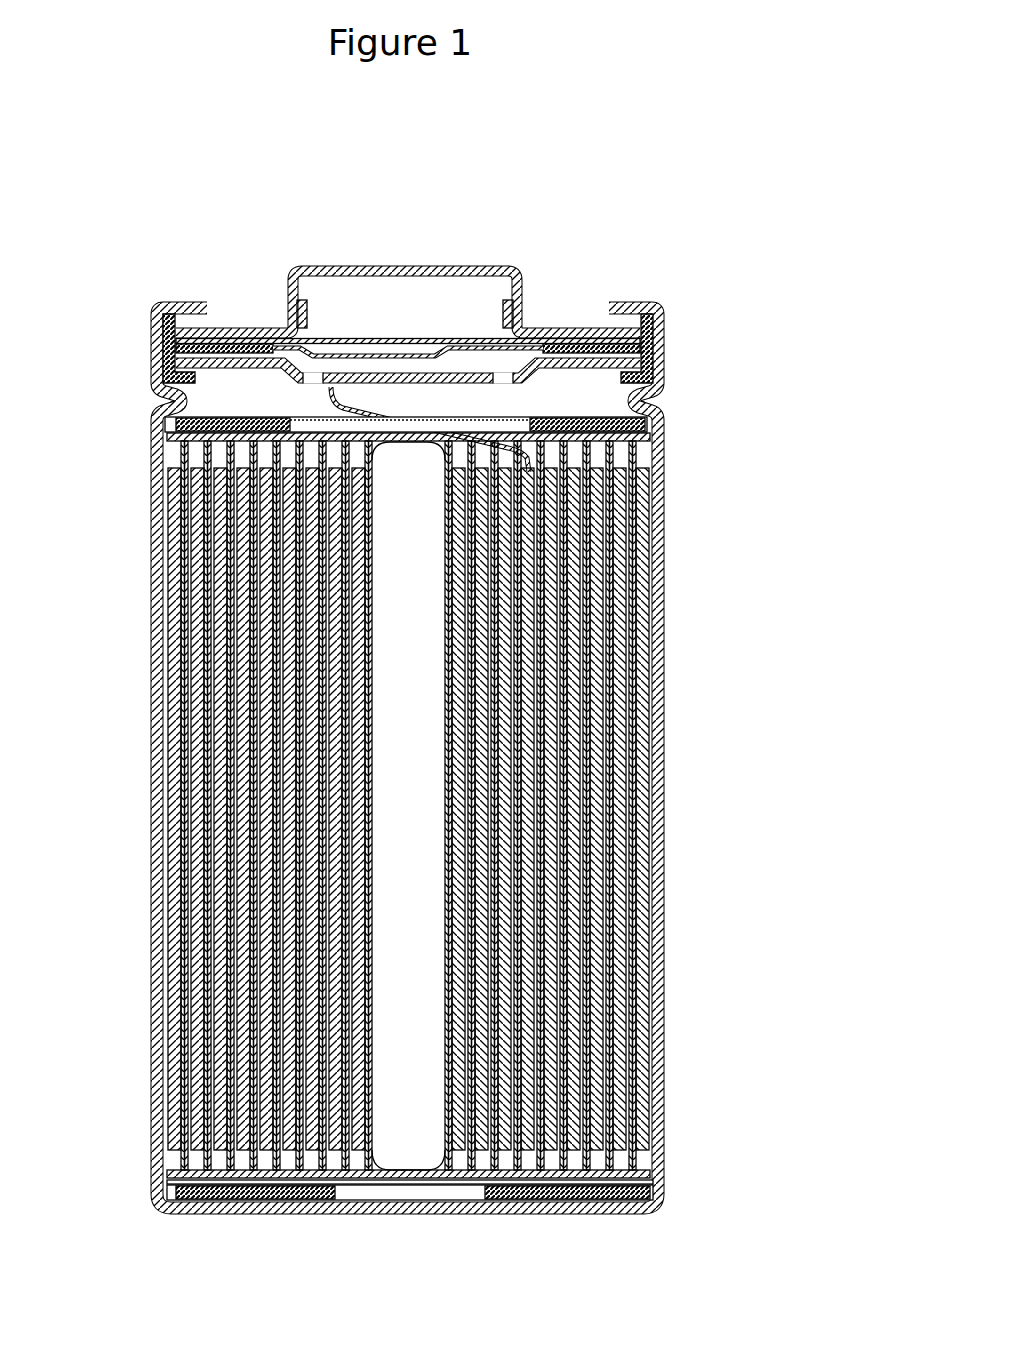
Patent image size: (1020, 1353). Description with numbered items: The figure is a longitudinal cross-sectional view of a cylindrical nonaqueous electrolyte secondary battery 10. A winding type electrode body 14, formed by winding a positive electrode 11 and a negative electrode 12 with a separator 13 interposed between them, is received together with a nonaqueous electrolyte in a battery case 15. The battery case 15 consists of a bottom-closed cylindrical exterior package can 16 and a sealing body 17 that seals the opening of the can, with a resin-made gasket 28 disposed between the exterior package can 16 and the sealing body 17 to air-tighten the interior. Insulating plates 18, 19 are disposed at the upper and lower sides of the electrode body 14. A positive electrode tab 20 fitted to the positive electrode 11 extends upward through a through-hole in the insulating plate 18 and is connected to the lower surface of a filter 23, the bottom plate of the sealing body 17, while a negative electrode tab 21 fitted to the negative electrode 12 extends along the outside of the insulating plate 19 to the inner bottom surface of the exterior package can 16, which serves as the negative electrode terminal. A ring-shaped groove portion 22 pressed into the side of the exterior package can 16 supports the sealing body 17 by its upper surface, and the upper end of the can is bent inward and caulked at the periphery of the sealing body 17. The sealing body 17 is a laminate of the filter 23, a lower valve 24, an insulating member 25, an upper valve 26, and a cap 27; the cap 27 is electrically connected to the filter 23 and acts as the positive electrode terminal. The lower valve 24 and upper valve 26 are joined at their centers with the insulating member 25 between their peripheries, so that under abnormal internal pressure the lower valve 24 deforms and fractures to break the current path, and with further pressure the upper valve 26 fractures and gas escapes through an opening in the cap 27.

The nonaqueous electrolyte secondary battery 10 is at (682, 128).
The positive electrode 11 is at (625, 890).
The negative electrode 12 is at (638, 915).
The separator 13 is at (650, 942).
The winding type electrode body 14 is at (760, 868).
The battery case 15 is at (546, 207).
The exterior package can 16 is at (629, 296).
The sealing body 17 is at (556, 316).
The insulating plate 18 is at (663, 430).
The insulating plate 19 is at (667, 1200).
The positive electrode tab 20 is at (335, 409).
The negative electrode tab 21 is at (170, 1188).
The groove portion 22 is at (170, 398).
The filter 23 is at (410, 378).
The lower valve 24 is at (304, 356).
The insulating member 25 is at (238, 340).
The upper valve 26 is at (333, 341).
The cap 27 is at (478, 268).
The gasket 28 is at (665, 330).